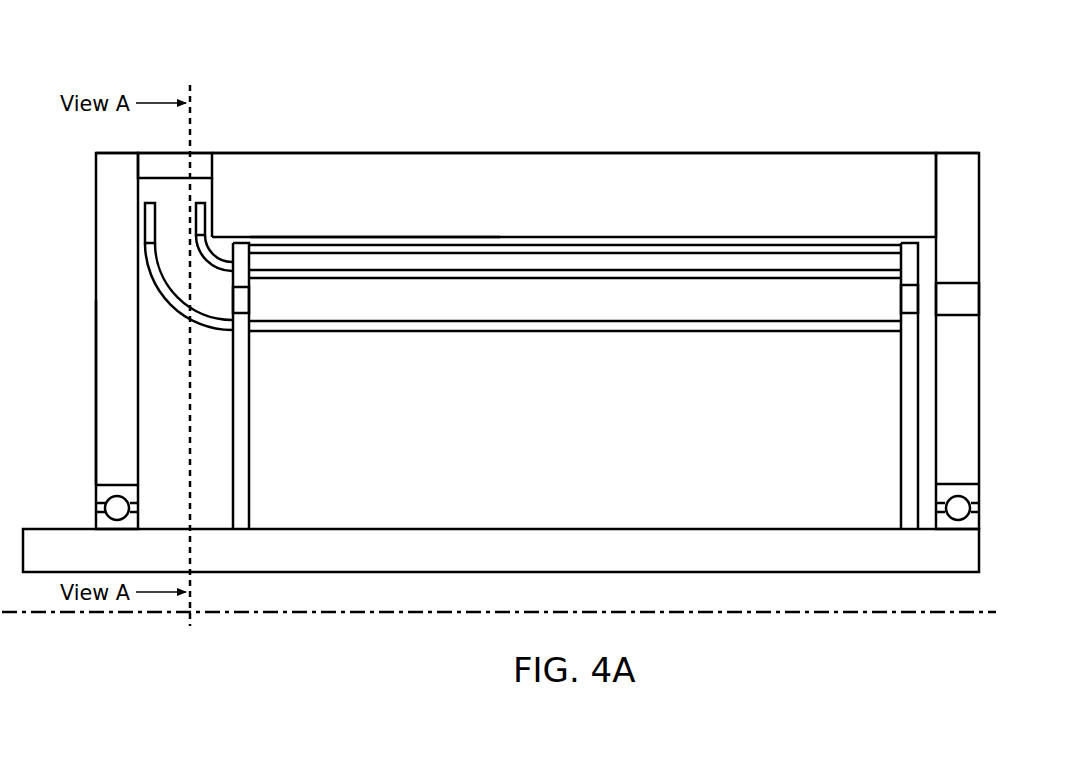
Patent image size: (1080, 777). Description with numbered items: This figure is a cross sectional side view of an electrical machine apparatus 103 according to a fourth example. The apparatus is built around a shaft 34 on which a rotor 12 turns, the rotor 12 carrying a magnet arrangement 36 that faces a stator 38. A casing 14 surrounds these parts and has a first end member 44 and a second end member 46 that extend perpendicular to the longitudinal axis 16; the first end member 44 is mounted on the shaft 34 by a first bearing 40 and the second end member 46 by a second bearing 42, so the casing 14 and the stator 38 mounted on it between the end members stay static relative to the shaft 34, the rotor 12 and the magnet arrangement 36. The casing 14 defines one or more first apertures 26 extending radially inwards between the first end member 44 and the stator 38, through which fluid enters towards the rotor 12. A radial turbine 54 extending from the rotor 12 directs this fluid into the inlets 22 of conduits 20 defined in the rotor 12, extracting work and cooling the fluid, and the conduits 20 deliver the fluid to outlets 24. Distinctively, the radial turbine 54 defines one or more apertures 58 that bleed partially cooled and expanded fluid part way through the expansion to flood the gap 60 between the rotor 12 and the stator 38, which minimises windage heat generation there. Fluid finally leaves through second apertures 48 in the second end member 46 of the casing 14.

The electrical machine apparatus 103 is at (608, 92).
The rotor 12 is at (248, 486).
The casing 14 is at (112, 307).
The longitudinal axis 16 is at (722, 613).
The conduits 20 is at (440, 300).
The inlet 22 is at (240, 300).
The outlet 24 is at (910, 298).
The first apertures 26 is at (198, 158).
The shaft 34 is at (957, 548).
The magnet arrangement 36 is at (515, 258).
The stator 38 is at (574, 195).
The first bearing 40 is at (92, 507).
The second bearing 42 is at (990, 507).
The first end member 44 is at (112, 190).
The second end member 46 is at (948, 170).
The second apertures 48 is at (957, 300).
The radial turbine 54 is at (181, 328).
The apertures 58 is at (200, 234).
The gap 60 is at (307, 238).